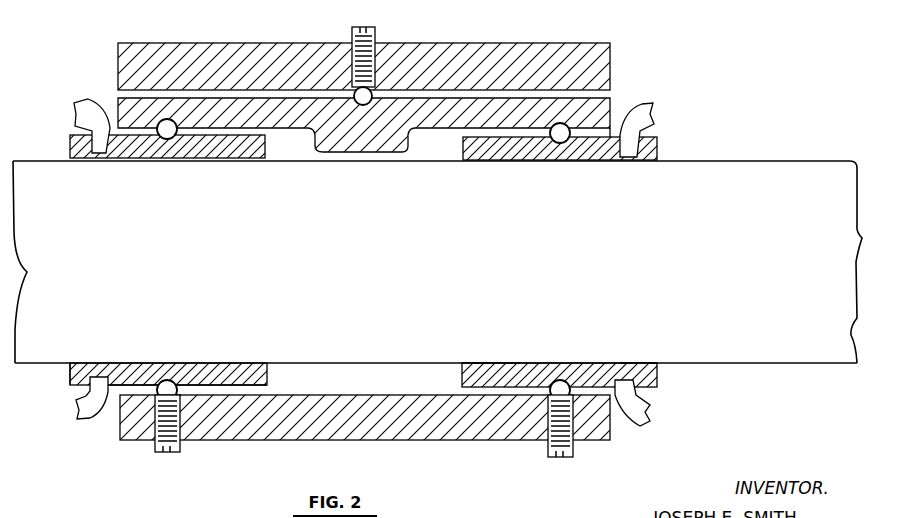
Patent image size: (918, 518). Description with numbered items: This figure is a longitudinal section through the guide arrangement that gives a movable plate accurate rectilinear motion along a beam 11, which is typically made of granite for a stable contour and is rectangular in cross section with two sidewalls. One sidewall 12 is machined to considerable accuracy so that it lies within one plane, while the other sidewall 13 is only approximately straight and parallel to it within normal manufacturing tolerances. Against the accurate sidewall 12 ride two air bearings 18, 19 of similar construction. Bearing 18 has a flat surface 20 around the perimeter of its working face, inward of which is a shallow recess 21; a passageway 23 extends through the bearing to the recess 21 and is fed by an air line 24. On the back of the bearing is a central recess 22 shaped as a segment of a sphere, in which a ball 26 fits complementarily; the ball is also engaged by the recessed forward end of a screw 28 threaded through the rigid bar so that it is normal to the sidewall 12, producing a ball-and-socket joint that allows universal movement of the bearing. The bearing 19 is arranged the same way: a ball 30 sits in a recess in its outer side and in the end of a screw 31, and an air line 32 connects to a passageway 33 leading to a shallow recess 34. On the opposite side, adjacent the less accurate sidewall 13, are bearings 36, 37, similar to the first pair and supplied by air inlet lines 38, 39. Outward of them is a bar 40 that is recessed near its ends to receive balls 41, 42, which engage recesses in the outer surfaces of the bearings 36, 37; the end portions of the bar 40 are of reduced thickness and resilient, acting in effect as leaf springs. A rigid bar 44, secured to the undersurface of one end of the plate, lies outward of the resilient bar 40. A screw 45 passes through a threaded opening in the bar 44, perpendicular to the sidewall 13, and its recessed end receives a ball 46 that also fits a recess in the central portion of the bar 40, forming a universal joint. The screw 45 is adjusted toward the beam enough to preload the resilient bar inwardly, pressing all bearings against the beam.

The beam 11 is at (808, 159).
The sidewall 12 is at (773, 364).
The sidewall 13 is at (768, 161).
The air bearing 18 is at (268, 374).
The air bearing 19 is at (660, 374).
The flat surface 20 is at (240, 362).
The shallow recess 21 is at (210, 363).
The central recess 22 is at (160, 381).
The passageway 23 is at (102, 370).
The air line 24 is at (92, 414).
The ball 26 is at (177, 385).
The screw 28 is at (160, 441).
The ball 30 is at (566, 383).
The screw 31 is at (548, 446).
The air line 32 is at (631, 414).
The passageway 33 is at (634, 366).
The shallow recess 34 is at (512, 365).
The air bearing 36 is at (314, 148).
The air bearing 37 is at (466, 150).
The air inlet line 38 is at (102, 116).
The air inlet line 39 is at (630, 107).
The resilient bar 40 is at (612, 112).
The ball 41 is at (148, 152).
The ball 42 is at (558, 142).
The rigid bar 44 is at (455, 43).
The screw 45 is at (376, 35).
The ball 46 is at (362, 105).